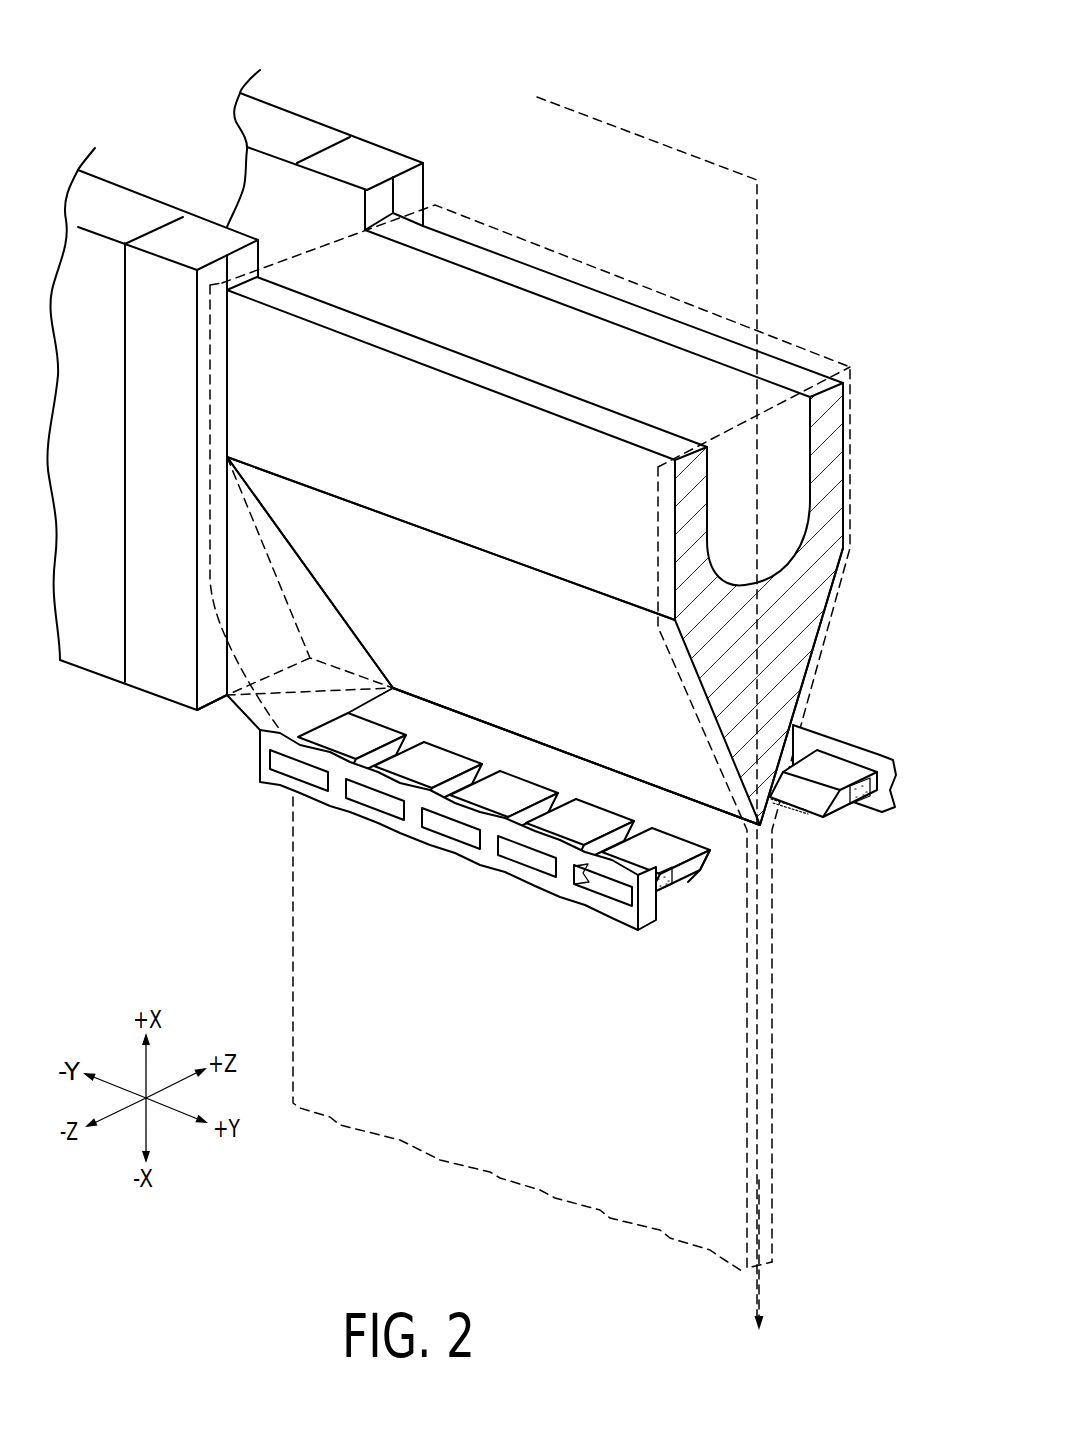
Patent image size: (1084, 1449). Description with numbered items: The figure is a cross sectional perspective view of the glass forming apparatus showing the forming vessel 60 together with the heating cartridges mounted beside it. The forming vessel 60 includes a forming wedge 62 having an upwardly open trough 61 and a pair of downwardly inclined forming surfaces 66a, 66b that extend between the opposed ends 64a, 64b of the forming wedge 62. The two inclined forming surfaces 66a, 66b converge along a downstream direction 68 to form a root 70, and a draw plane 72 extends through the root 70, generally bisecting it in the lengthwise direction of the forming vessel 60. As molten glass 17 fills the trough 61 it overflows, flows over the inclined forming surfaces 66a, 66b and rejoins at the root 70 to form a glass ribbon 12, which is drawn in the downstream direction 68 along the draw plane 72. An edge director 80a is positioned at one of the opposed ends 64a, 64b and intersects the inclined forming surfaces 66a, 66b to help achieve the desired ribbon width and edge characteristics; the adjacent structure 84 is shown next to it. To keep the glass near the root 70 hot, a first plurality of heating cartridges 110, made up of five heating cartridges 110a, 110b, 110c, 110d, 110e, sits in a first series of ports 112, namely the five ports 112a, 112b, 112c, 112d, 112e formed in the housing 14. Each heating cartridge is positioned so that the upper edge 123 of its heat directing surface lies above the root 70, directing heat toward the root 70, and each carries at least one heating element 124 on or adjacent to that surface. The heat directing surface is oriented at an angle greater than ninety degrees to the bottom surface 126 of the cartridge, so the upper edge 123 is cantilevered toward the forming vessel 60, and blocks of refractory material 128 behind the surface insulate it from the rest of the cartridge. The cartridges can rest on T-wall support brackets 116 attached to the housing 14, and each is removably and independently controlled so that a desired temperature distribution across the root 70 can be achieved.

The forming vessel 60 is at (733, 93).
The forming wedge 62 is at (512, 222).
The upwardly open trough 61 is at (532, 325).
The molten glass 17 is at (628, 353).
The draw plane 72 is at (760, 250).
The opposed end 64a is at (245, 372).
The opposed end 64b is at (858, 443).
The downwardly inclined forming surface 66a is at (682, 672).
The downwardly inclined forming surface 66b is at (838, 575).
The root 70 is at (760, 828).
The downstream direction 68 is at (762, 1280).
The edge director 80a is at (318, 632).
The carrier 84 is at (103, 667).
The housing 14 is at (240, 784).
The first plurality of heating cartridges 110 is at (652, 703).
The heating cartridge 110a is at (385, 735).
The heating cartridge 110b is at (447, 763).
The heating cartridge 110c is at (512, 792).
The heating cartridge 110d is at (592, 816).
The heating cartridge 110e is at (669, 845).
The first series of ports 112 is at (635, 992).
The port 112a is at (283, 770).
The port 112b is at (373, 800).
The port 112c is at (453, 835).
The port 112d is at (537, 860).
The port 112e is at (613, 890).
The T-wall support bracket 116 is at (585, 872).
The upper edge 123 is at (766, 838).
The heating element 124 is at (792, 810).
The bottom surface 126 is at (690, 880).
The refractory material 128 is at (666, 885).
The glass ribbon 12 is at (547, 1200).